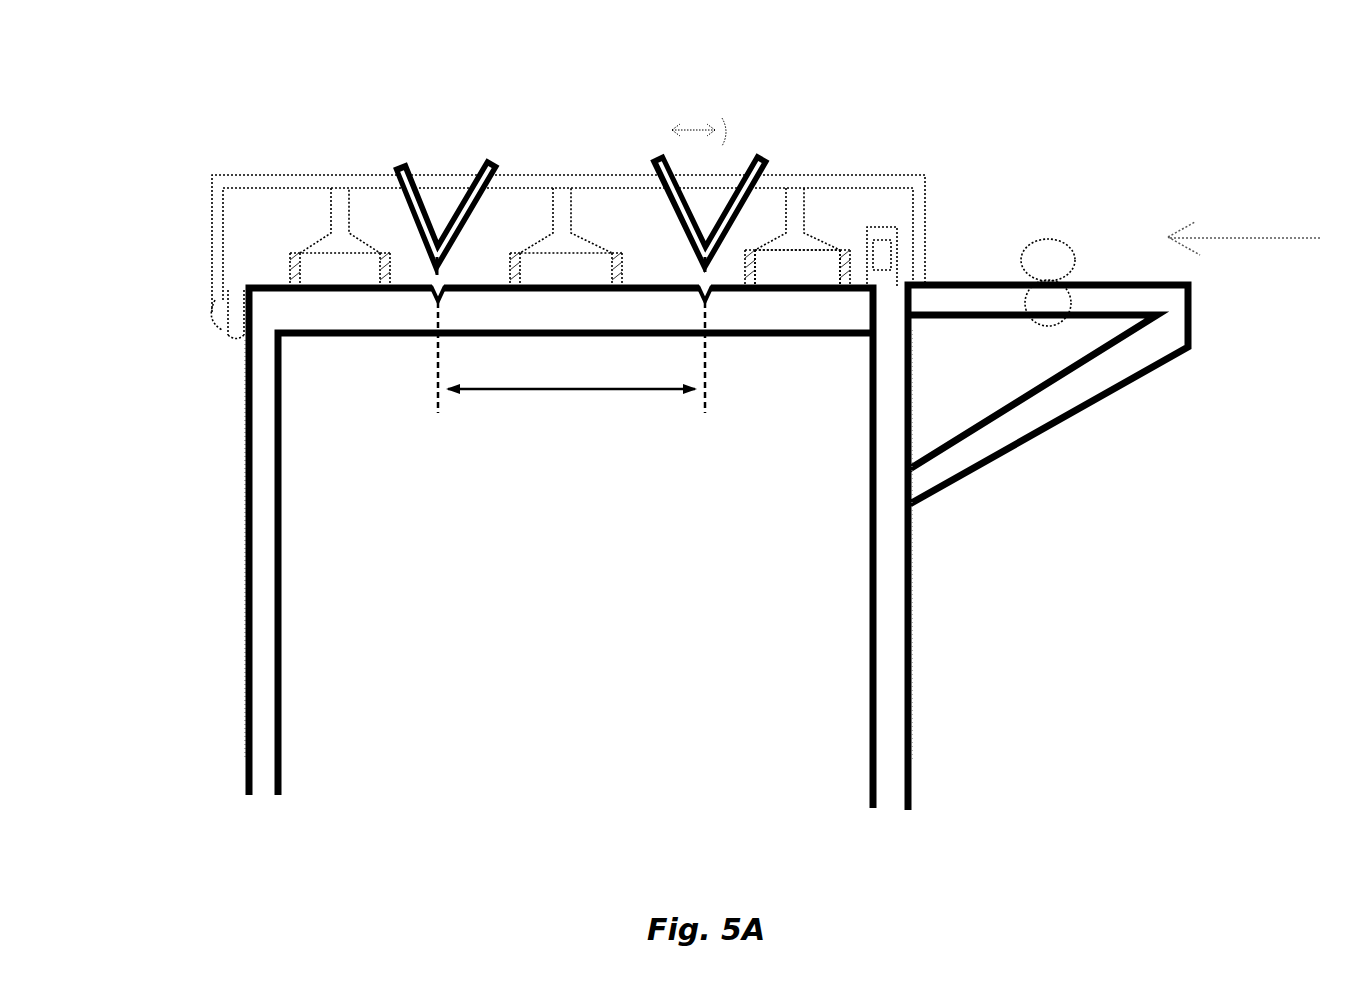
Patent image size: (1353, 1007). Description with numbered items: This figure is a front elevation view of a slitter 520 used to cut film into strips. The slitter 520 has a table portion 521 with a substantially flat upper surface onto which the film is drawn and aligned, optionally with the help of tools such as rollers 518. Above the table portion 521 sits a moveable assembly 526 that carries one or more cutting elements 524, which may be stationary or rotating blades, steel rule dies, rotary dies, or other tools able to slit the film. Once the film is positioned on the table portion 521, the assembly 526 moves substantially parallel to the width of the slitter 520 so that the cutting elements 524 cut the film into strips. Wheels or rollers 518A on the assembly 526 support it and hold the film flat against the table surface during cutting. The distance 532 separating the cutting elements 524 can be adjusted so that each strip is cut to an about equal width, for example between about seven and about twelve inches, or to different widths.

The slitter 520 is at (216, 98).
The table portion 521 is at (272, 315).
The cutting elements 524 is at (426, 274).
The moveable assembly 526 is at (823, 178).
The rollers 518 is at (1047, 258).
The wheels or rollers 518A is at (755, 268).
The distance 532 is at (520, 390).